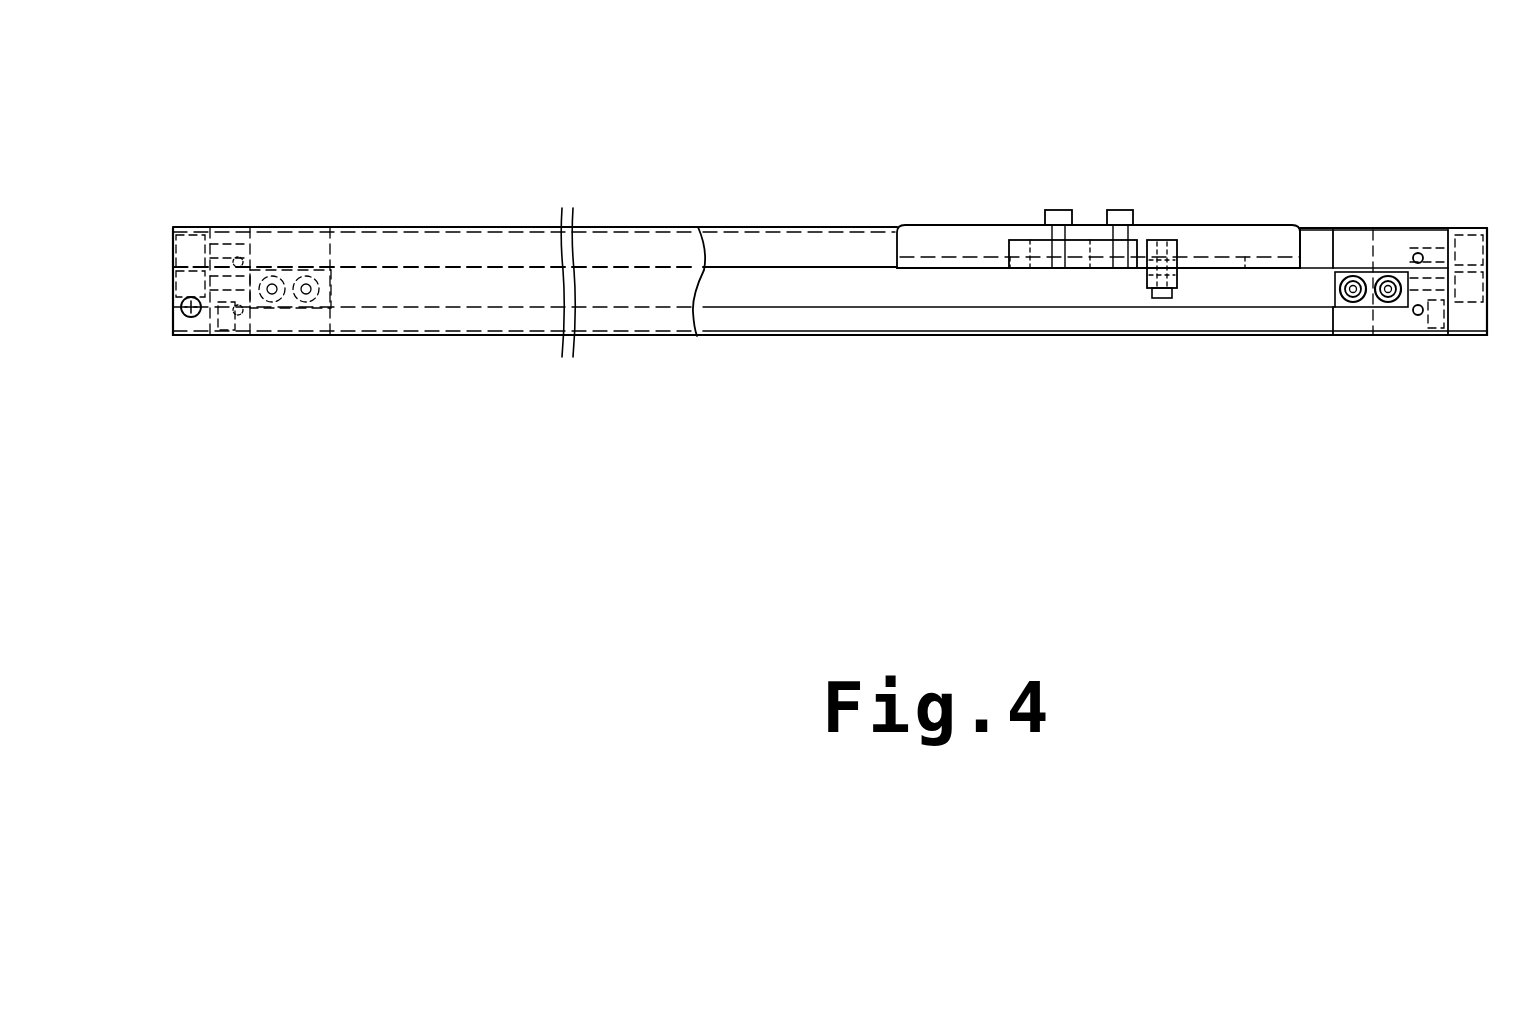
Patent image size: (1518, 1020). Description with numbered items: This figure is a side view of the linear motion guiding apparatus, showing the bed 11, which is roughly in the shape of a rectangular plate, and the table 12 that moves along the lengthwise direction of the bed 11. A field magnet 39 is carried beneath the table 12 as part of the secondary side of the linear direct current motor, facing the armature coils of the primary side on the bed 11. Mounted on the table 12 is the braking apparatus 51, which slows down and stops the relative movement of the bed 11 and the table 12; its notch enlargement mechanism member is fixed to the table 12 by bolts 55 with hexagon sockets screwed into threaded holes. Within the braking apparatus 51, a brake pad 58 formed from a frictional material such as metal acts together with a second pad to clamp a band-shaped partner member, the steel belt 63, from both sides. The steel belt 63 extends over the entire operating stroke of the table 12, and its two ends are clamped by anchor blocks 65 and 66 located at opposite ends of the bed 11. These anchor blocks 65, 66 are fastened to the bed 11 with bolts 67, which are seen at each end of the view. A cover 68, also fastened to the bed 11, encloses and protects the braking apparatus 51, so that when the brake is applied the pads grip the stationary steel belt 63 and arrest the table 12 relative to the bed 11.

The bed 11 is at (922, 317).
The table 12 is at (965, 220).
The field magnet 39 is at (1222, 248).
The braking apparatus 51 is at (1080, 282).
The bolts 55 is at (1060, 210).
The brake pad 58 is at (1178, 275).
The steel belt 63 is at (794, 290).
The anchor block 65 is at (314, 228).
The anchor block 66 is at (277, 228).
The bolts 67 is at (303, 303).
The cover 68 is at (430, 230).